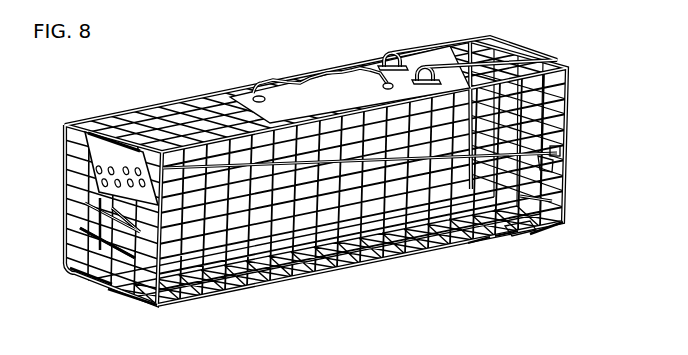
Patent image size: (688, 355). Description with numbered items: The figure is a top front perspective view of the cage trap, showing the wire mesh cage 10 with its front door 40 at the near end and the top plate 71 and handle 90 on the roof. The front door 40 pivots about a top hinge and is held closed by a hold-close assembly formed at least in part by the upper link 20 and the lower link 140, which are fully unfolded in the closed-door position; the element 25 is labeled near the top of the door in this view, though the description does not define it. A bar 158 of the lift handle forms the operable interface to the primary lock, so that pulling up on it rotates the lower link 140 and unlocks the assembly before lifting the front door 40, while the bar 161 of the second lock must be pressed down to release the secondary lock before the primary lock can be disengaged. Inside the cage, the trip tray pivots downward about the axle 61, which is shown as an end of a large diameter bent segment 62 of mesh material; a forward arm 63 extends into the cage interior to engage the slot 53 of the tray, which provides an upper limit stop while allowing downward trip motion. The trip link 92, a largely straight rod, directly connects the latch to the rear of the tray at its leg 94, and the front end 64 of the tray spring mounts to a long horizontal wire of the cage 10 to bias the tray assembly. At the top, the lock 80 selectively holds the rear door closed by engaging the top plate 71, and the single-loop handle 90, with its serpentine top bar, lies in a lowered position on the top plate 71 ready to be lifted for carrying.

The cage 10 is at (65, 126).
The upper link 20 is at (97, 155).
The door hinge 25 is at (100, 133).
The front door 40 is at (137, 302).
The slot 53 is at (523, 230).
The axle 61 is at (552, 201).
The bent segment 62 is at (547, 227).
The forward arm 63 is at (510, 233).
The front end of tray spring 64 is at (478, 240).
The top plate 71 is at (235, 95).
The lock 80 is at (393, 50).
The handle 90 is at (275, 79).
The trip link 92 is at (550, 160).
The leg of trip link 94 is at (557, 151).
The lower link 140 is at (80, 228).
The bar 158 is at (83, 270).
The bar 161 is at (85, 203).